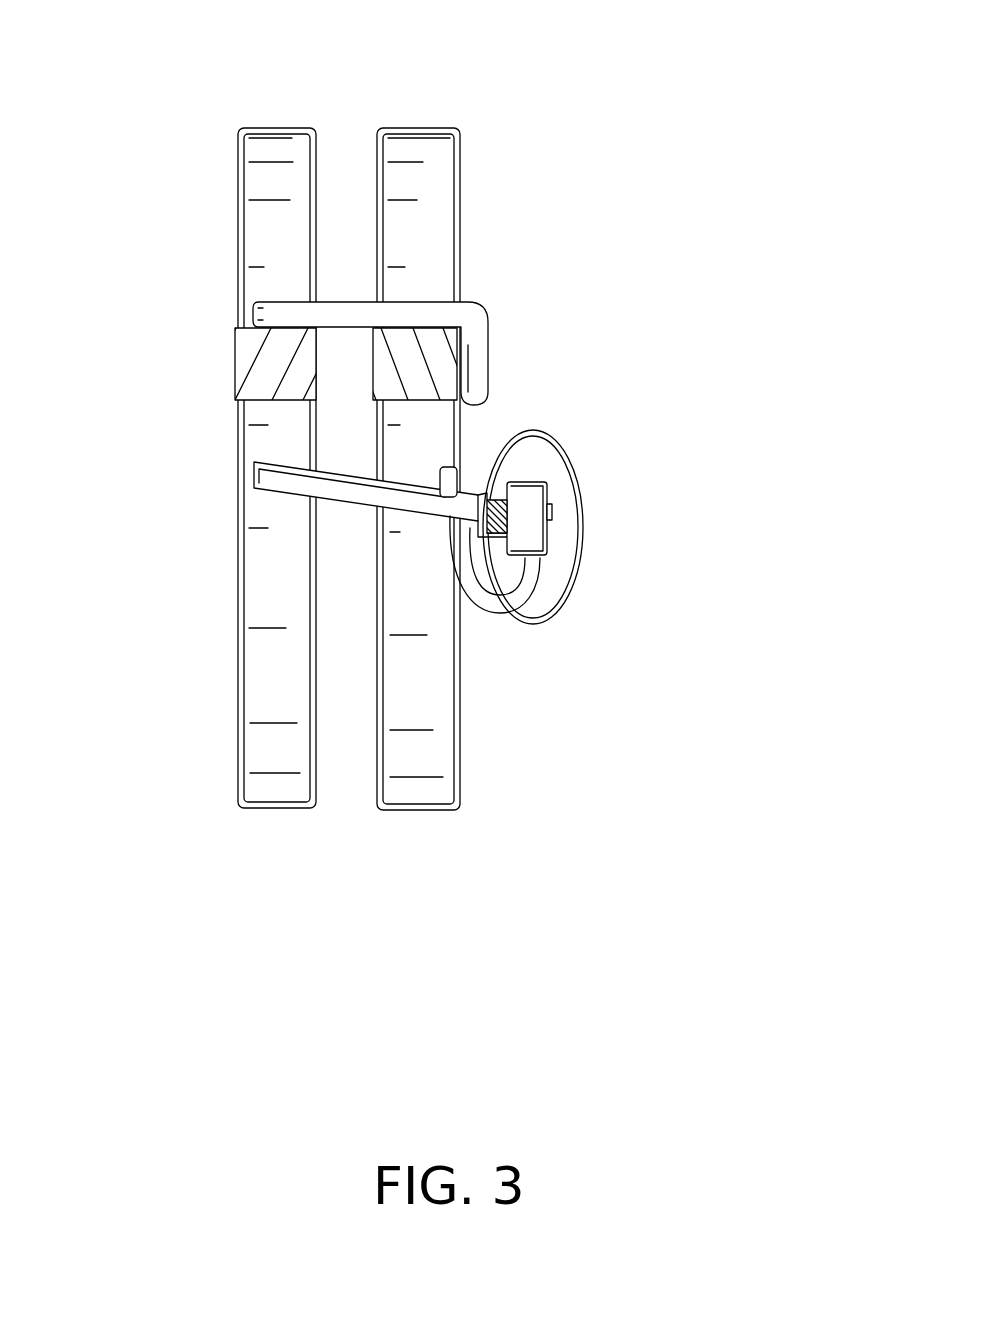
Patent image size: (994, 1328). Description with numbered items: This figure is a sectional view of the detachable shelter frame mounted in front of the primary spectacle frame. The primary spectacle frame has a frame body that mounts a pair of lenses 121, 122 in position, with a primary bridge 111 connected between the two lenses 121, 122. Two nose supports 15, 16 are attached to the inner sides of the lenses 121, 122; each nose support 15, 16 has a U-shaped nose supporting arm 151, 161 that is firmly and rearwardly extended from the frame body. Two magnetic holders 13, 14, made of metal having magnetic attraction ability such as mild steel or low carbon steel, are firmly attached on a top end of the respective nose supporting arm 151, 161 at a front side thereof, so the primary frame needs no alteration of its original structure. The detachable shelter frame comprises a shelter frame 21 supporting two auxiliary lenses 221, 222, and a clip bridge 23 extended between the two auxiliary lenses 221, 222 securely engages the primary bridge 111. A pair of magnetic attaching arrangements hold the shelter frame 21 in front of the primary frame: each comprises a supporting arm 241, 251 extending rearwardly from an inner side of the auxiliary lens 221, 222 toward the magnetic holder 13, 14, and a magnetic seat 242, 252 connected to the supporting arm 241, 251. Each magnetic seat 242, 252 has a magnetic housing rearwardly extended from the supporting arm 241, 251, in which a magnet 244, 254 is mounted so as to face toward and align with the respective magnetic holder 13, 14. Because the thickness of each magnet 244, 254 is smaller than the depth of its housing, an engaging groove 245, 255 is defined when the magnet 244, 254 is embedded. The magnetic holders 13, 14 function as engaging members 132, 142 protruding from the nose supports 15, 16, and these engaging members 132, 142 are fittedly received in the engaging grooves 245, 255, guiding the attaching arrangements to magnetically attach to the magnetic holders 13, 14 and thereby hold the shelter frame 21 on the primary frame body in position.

The magnetic holder 13 is at (660, 539).
The magnetic holder 14 is at (548, 524).
The nose support 15 is at (592, 584).
The nose support 16 is at (545, 600).
The shelter frame 21 is at (257, 358).
The clip bridge 23 is at (405, 313).
The primary bridge 111 is at (428, 363).
The lens 121 is at (460, 581).
The lens 122 is at (410, 788).
The engaging member 132 is at (696, 571).
The engaging member 142 is at (696, 571).
The nose supporting arm 151 is at (540, 666).
The nose supporting arm 161 is at (522, 540).
The auxiliary lens 221 is at (204, 554).
The auxiliary lens 222 is at (276, 790).
The supporting arm 241 is at (263, 542).
The supporting arm 251 is at (353, 493).
The magnetic seat 242 is at (641, 425).
The magnetic seat 252 is at (488, 497).
The magnet 244 is at (255, 440).
The magnet 254 is at (470, 500).
The engaging groove 245 is at (667, 503).
The engaging groove 255 is at (510, 509).